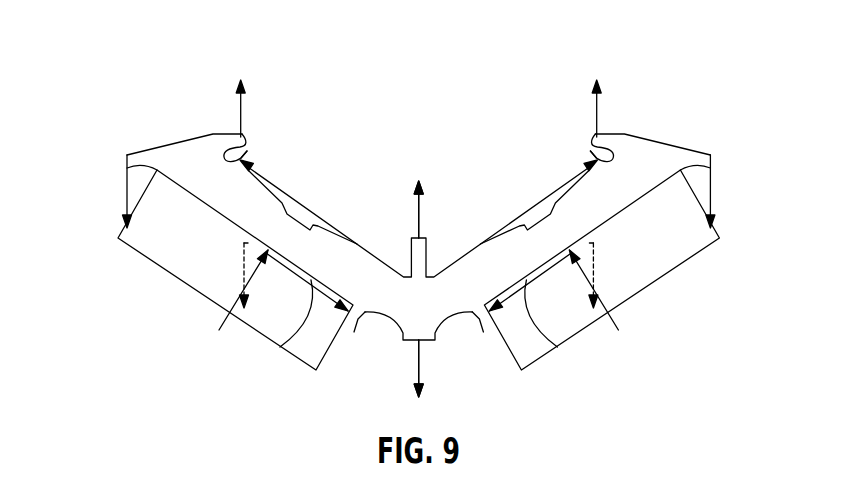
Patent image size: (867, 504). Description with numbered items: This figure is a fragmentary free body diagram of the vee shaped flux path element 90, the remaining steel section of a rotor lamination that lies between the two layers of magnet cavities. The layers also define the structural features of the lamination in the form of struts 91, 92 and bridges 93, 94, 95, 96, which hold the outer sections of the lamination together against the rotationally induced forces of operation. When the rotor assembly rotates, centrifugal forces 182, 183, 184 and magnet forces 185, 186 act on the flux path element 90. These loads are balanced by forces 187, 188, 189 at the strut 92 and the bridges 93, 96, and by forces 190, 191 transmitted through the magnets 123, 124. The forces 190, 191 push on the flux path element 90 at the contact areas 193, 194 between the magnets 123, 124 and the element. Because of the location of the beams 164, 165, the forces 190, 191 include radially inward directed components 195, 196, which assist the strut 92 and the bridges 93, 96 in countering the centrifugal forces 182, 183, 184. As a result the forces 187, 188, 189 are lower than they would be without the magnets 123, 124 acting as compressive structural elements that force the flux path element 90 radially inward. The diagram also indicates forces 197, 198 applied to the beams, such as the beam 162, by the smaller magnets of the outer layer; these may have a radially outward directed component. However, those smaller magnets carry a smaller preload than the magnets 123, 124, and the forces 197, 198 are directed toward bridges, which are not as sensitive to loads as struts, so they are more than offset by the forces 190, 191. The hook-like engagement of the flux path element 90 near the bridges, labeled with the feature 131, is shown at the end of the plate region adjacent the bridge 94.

The vee shaped flux path element 90 is at (435, 312).
The strut 91 is at (428, 237).
The strut 92 is at (427, 331).
The bridge 93 is at (132, 156).
The bridge 94 is at (248, 137).
The bridge 95 is at (603, 134).
The bridge 96 is at (711, 158).
The magnet 123 is at (152, 261).
The magnet 124 is at (661, 278).
The left hook opening 131 is at (246, 152).
The beam 162 is at (591, 150).
The beam 164 is at (358, 320).
The beam 165 is at (485, 330).
The centrifugal force 182 is at (238, 108).
The centrifugal force 183 is at (412, 203).
The centrifugal force 184 is at (594, 108).
The magnet force 185 is at (222, 325).
The magnet force 186 is at (616, 325).
The force 187 is at (124, 190).
The force 188 is at (417, 367).
The force 189 is at (714, 190).
The force 190 is at (280, 347).
The force 191 is at (557, 347).
The contact area 193 is at (331, 291).
The contact area 194 is at (506, 291).
The radially inward directed component 195 is at (243, 267).
The radially inward directed component 196 is at (597, 267).
The force 197 is at (297, 200).
The force 198 is at (553, 193).